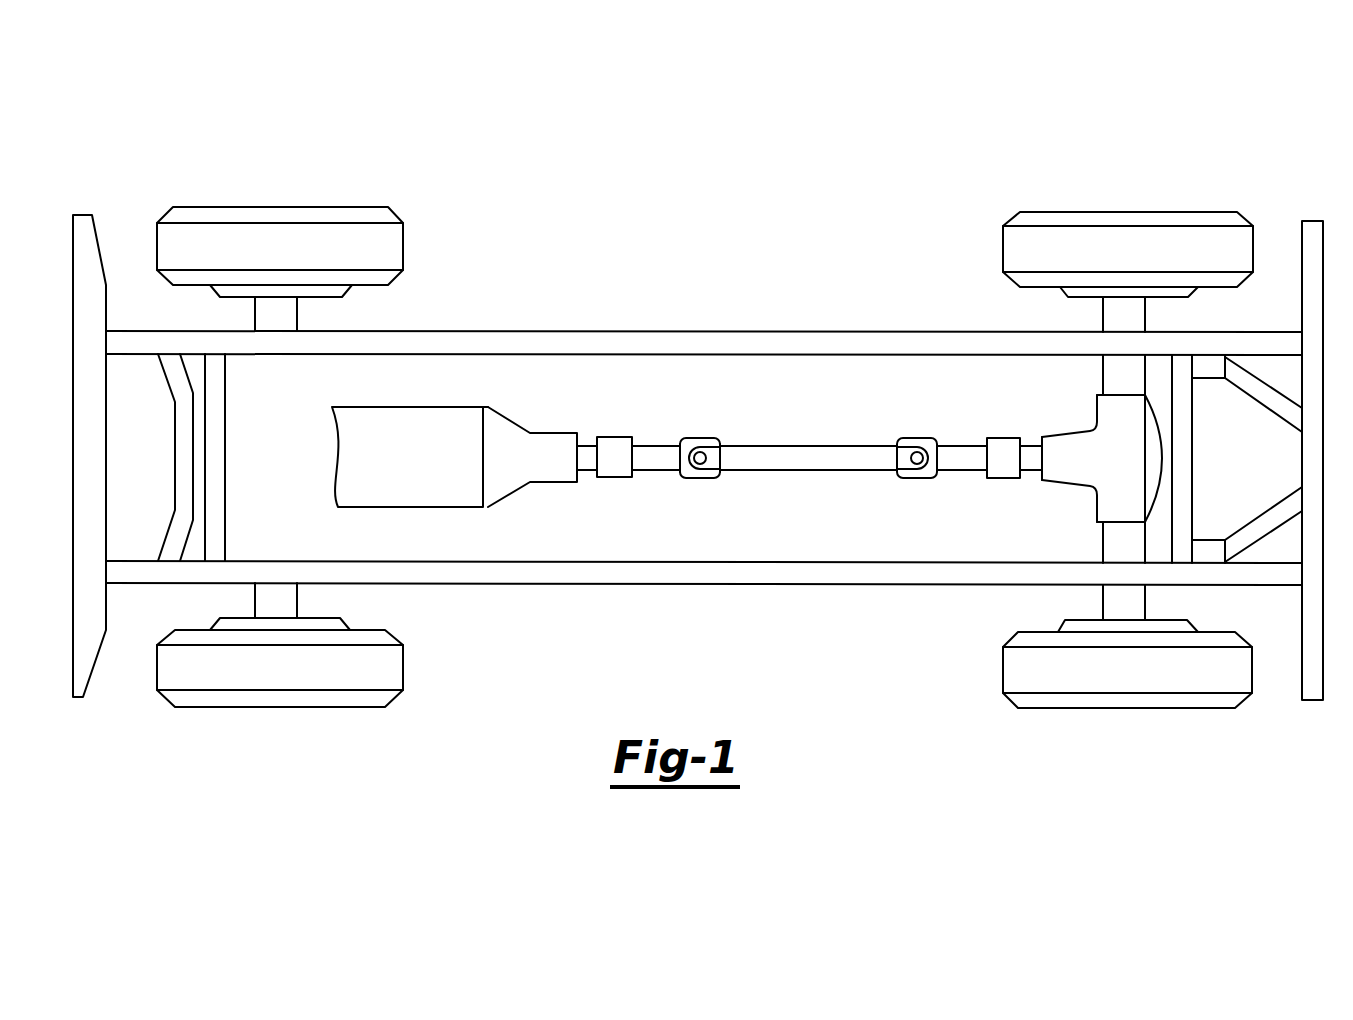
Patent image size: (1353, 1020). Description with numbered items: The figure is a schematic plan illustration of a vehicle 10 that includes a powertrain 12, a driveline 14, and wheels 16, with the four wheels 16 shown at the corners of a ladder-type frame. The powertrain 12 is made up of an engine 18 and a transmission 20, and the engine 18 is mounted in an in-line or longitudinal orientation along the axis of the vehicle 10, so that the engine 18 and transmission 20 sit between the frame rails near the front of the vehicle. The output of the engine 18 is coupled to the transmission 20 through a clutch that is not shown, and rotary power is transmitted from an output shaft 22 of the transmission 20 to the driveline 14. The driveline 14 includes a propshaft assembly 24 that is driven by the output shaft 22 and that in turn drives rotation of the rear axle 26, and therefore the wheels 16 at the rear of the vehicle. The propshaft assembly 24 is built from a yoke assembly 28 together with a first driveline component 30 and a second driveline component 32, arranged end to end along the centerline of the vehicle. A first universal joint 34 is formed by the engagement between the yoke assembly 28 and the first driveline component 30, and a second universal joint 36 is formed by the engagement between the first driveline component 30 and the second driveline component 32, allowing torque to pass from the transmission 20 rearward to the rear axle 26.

The vehicle 10 is at (285, 142).
The powertrain 12 is at (477, 410).
The driveline 14 is at (809, 404).
The wheels 16 is at (1142, 210).
The engine 18 is at (433, 488).
The transmission 20 is at (553, 482).
The output shaft 22 is at (583, 445).
The propshaft assembly 24 is at (848, 454).
The rear axle 26 is at (1088, 382).
The yoke assembly 28 is at (668, 480).
The first driveline component 30 is at (807, 472).
The second driveline component 32 is at (962, 473).
The first universal joint 34 is at (703, 422).
The second universal joint 36 is at (917, 425).